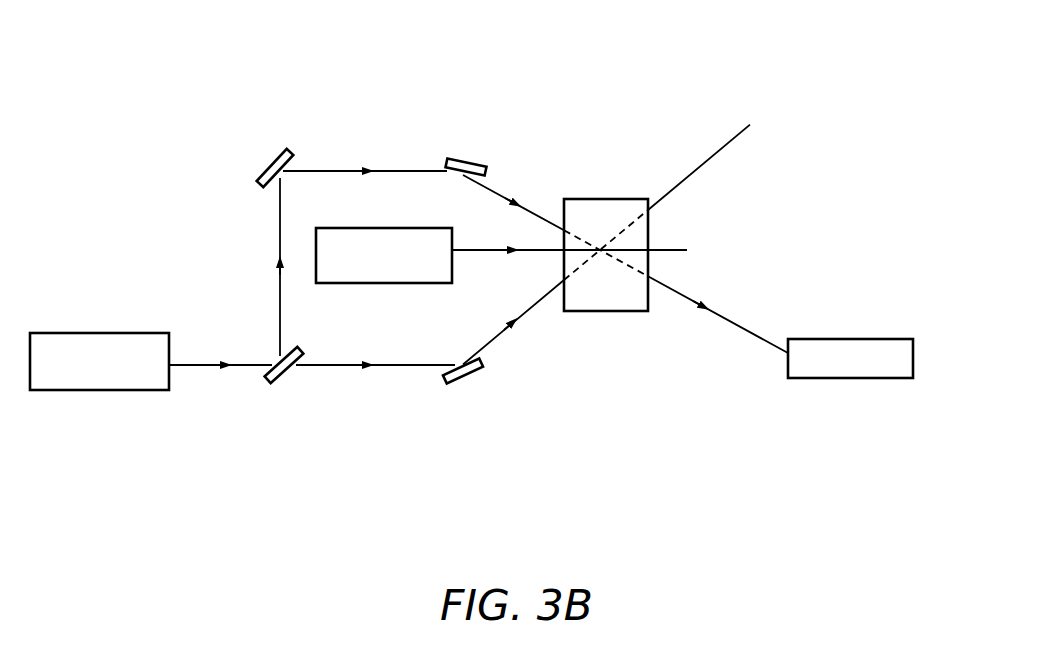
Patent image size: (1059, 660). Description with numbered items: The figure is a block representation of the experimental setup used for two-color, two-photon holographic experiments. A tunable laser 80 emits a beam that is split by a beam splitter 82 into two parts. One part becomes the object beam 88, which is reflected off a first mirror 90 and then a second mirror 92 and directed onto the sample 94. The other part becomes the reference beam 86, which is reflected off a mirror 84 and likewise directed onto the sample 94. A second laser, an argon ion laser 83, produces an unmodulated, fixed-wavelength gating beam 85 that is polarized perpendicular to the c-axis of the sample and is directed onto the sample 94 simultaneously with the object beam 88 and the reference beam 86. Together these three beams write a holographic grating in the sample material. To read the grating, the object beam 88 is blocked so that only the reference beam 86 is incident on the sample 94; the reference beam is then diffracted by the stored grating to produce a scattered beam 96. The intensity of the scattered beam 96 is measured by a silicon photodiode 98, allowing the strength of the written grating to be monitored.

The tunable laser 80 is at (99, 344).
The beam splitter 82 is at (311, 405).
The argon ion laser 83 is at (384, 241).
The mirror 84 is at (494, 401).
The gating beam 85 is at (569, 275).
The reference beam 86 is at (606, 254).
The object beam 88 is at (365, 115).
The mirror 90 is at (236, 152).
The mirror 92 is at (487, 173).
The sample 94 is at (622, 219).
The scattered beam 96 is at (635, 264).
The silicon photodiode 98 is at (850, 339).